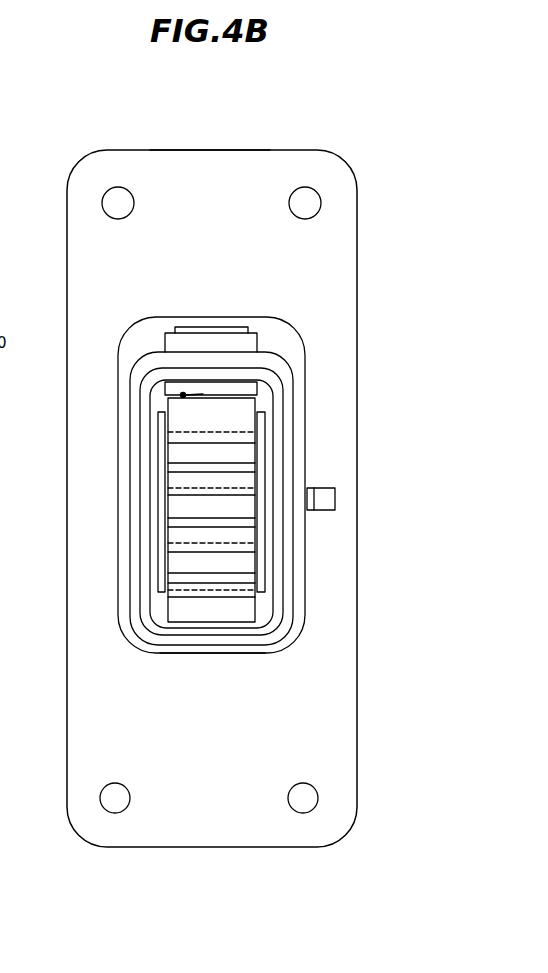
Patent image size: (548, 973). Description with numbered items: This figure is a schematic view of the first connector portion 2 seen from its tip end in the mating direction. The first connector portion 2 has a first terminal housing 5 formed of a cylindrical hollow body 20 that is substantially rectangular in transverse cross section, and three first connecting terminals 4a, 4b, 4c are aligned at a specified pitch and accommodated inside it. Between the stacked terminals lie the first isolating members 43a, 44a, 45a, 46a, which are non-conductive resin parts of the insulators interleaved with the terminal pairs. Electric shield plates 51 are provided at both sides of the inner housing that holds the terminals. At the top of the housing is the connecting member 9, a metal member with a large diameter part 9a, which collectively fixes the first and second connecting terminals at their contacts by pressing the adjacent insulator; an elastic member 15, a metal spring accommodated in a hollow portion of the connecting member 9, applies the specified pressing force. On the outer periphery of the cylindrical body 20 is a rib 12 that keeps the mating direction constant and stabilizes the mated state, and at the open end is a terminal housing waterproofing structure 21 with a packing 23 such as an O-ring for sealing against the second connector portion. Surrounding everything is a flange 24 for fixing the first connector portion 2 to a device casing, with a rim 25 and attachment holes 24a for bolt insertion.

The first connector portion 2 is at (67, 153).
The flange 24 is at (220, 152).
The rim 25 is at (160, 201).
The attachment hole 24a is at (126, 785).
The cylindrical hollow body 20 is at (296, 363).
The first terminal housing 5 is at (268, 362).
The packing 23 is at (272, 648).
The terminal housing waterproofing structure 21 is at (225, 657).
The connecting member 9 is at (195, 326).
The large diameter part 9a is at (233, 328).
The elastic member 15 is at (181, 394).
The electric shield plate 51 is at (262, 441).
The first connecting terminal 4a is at (170, 439).
The first connecting terminal 4b is at (170, 493).
The first connecting terminal 4c is at (170, 548).
The first isolating member 43a is at (172, 421).
The first isolating member 44a is at (172, 478).
The first isolating member 45a is at (172, 534).
The first isolating member 46a is at (172, 588).
The rib 12 is at (330, 499).